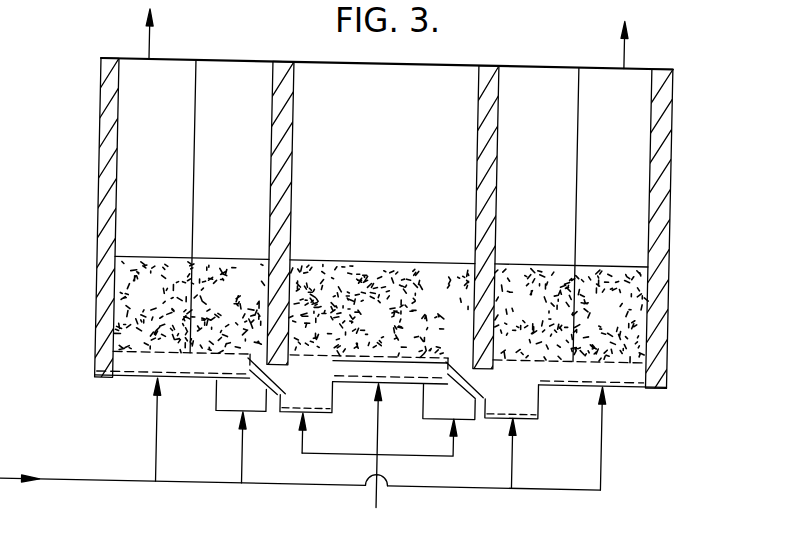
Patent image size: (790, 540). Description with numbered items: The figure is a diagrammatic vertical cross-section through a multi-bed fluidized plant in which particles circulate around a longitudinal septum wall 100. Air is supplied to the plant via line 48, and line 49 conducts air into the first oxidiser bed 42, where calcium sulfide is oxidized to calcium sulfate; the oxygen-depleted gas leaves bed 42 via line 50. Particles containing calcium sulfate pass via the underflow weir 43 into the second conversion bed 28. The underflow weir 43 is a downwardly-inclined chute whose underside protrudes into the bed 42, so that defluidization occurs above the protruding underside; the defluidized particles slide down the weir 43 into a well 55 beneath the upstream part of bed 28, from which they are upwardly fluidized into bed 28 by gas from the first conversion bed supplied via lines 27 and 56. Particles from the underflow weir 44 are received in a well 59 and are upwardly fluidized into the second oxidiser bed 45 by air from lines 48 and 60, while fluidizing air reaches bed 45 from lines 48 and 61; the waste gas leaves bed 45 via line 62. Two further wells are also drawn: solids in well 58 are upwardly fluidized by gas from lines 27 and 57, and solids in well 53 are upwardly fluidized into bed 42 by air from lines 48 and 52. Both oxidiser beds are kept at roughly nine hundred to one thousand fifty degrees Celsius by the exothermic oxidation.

The line 27 is at (387, 502).
The second conversion bed 28 is at (402, 321).
The first oxidiser bed 42 is at (172, 305).
The underflow weir 43 is at (286, 367).
The underflow weir 44 is at (479, 360).
The second oxidiser bed 45 is at (552, 301).
The line 48 is at (70, 479).
The line 49 is at (164, 436).
The line 50 is at (148, 41).
The line 52 is at (250, 433).
The well 53 is at (244, 394).
The well 55 is at (343, 396).
The line 56 is at (311, 436).
The line 57 is at (435, 450).
The well 58 is at (452, 393).
The well 59 is at (545, 392).
The line 60 is at (520, 462).
The line 61 is at (610, 443).
The line 62 is at (624, 52).
The longitudinal septum wall 100 is at (214, 140).